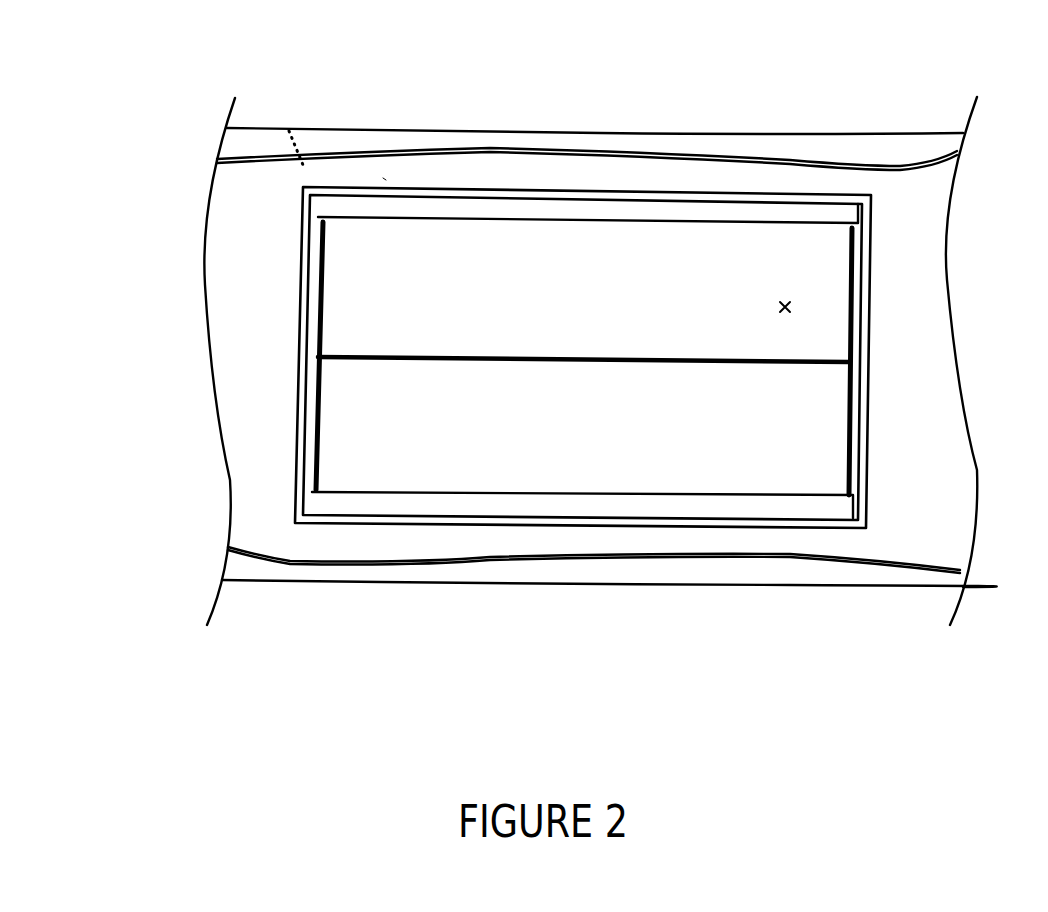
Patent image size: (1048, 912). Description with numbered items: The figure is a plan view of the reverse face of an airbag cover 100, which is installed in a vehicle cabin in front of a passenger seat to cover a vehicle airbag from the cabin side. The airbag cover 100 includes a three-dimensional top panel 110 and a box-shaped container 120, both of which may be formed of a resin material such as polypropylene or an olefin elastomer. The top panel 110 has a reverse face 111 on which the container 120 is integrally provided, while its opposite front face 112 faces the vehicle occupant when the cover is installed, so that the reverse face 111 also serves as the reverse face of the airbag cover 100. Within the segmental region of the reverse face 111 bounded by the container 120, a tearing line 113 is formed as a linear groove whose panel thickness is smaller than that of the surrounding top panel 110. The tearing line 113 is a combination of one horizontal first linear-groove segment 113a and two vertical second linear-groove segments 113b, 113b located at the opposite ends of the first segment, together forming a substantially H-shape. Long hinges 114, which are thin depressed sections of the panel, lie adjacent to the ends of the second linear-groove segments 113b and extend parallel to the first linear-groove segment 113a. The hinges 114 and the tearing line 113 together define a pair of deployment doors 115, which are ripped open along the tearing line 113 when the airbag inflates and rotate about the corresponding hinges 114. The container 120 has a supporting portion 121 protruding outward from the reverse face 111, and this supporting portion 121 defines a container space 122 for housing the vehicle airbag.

The airbag cover 100 is at (818, 110).
The top panel 110 is at (608, 131).
The reverse face 111 is at (385, 178).
The front face 112 is at (288, 127).
The tearing line 113 is at (697, 657).
The first linear-groove segment 113a is at (598, 363).
The second linear-groove segments 113b is at (323, 297).
The hinges 114 is at (675, 208).
The deployment doors 115 is at (503, 250).
The container 120 is at (868, 383).
The supporting portion 121 is at (297, 307).
The container space 122 is at (790, 306).